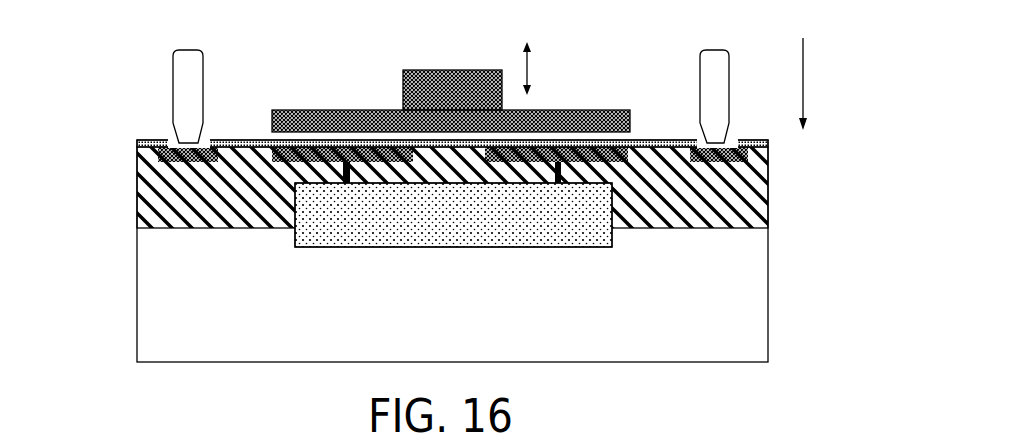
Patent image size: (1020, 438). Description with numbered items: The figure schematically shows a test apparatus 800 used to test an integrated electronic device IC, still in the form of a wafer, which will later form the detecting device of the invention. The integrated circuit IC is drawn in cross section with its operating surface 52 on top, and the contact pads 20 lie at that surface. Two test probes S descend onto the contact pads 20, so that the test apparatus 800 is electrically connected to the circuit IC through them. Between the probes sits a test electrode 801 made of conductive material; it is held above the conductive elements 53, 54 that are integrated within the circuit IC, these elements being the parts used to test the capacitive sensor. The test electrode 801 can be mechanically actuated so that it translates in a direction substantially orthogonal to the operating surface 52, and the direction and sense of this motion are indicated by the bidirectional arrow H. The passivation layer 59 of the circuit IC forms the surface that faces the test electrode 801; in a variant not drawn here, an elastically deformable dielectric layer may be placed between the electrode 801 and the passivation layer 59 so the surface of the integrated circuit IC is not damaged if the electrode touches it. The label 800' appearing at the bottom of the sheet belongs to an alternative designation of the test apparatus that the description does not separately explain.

The test apparatus 800 is at (423, 84).
The testing apparatus (alternative) 800' is at (260, 429).
The test probes S is at (205, 83).
The test electrode 801 is at (407, 90).
The bidirectional arrow H is at (532, 68).
The conductive element 54 is at (603, 157).
The contact pads 20 is at (160, 157).
The passivation layer 59 is at (273, 160).
The operating surface 52 is at (663, 162).
The integrated electronic device IC is at (134, 280).
The conductive element 53 is at (243, 150).